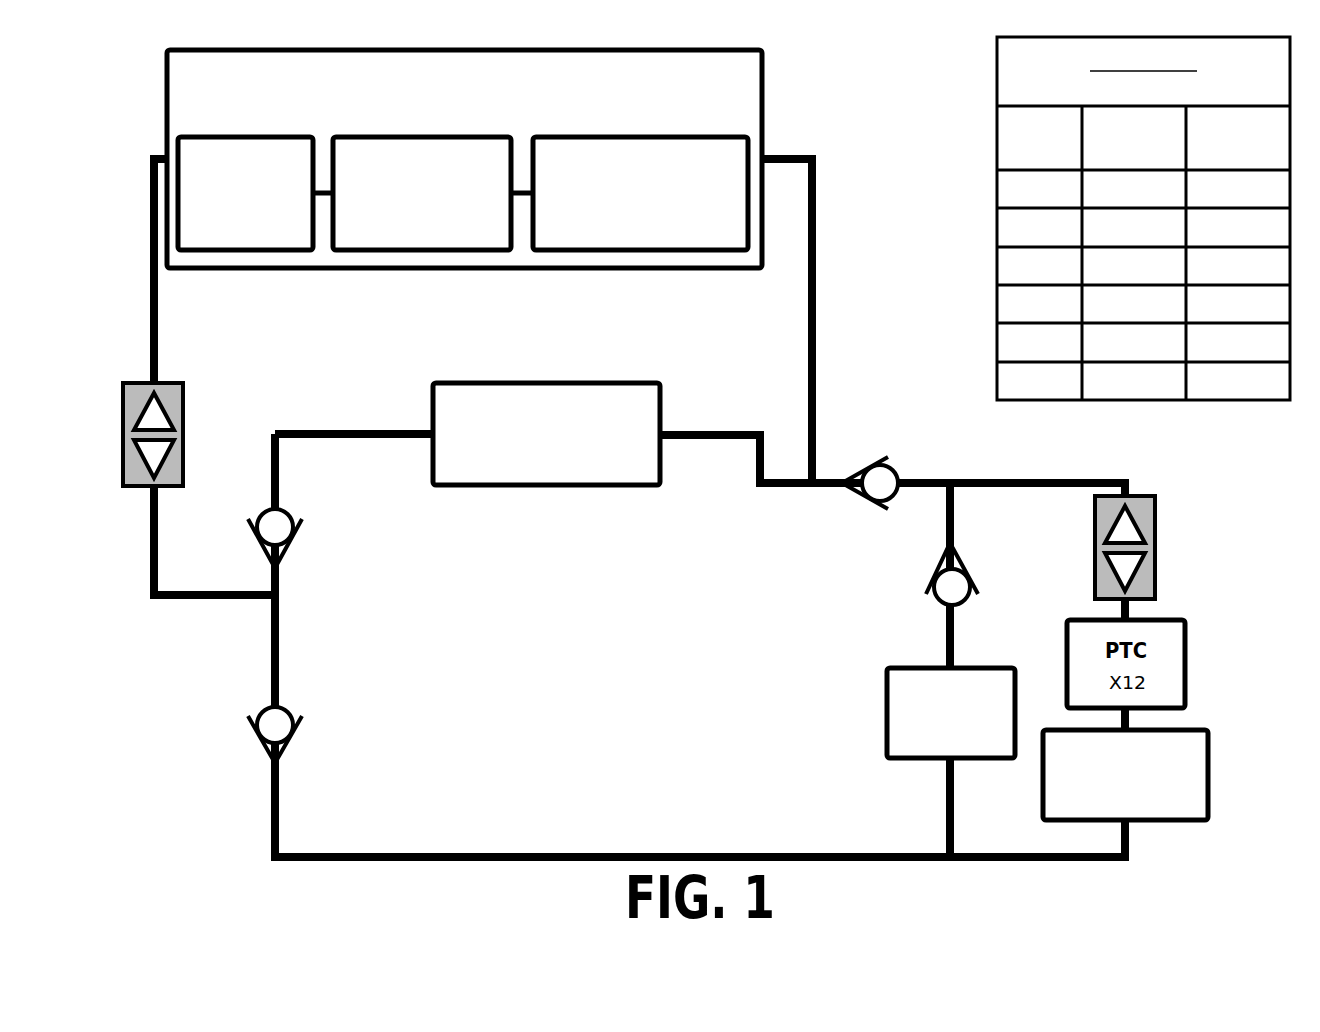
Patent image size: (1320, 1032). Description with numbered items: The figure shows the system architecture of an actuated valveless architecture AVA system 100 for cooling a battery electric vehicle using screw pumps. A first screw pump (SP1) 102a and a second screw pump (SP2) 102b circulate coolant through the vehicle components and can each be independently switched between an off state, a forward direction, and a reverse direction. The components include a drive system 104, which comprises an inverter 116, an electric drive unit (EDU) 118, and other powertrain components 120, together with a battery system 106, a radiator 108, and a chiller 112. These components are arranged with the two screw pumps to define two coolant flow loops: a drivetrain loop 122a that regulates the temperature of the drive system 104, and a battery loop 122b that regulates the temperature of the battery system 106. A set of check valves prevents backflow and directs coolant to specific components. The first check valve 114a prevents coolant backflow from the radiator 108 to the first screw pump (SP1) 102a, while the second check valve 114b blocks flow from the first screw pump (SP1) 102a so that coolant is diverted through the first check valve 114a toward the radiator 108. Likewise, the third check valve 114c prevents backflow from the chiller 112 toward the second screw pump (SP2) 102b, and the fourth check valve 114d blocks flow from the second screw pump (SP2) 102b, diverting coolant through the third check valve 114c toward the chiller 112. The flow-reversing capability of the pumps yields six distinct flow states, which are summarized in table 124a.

The AVA system 100 is at (121, 48).
The first screw pump (SP1) 102a is at (119, 434).
The second screw pump (SP2) 102b is at (1157, 547).
The drive system 104 is at (464, 159).
The battery system 106 is at (1125, 775).
The radiator 108 is at (546, 434).
The chiller 112 is at (951, 713).
The first check valve 114a is at (320, 540).
The second check valve 114b is at (320, 738).
The third check valve 114c is at (996, 574).
The fourth check valve 114d is at (867, 454).
The inverter 116 is at (245, 193).
The electric drive unit (EDU) 118 is at (422, 193).
The other powertrain components 120 is at (640, 193).
The drivetrain loop 122a is at (838, 128).
The battery loop 122b is at (1222, 486).
The table 124a is at (1143, 218).